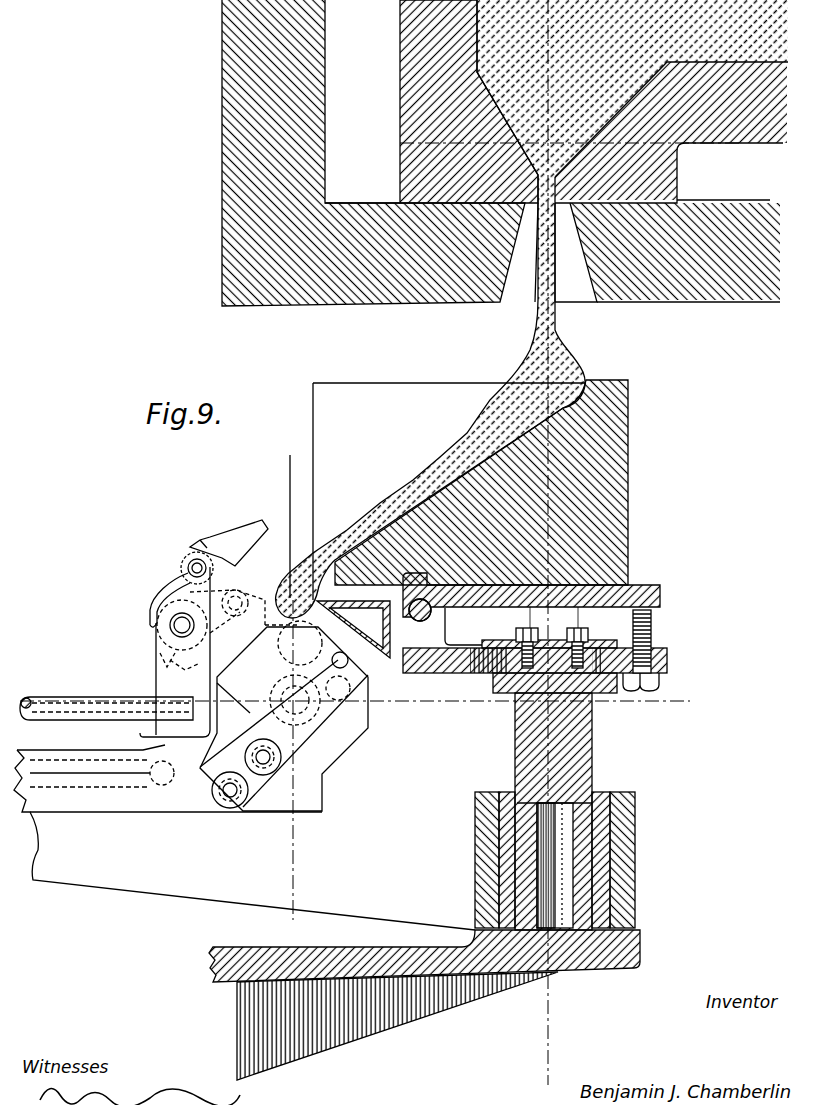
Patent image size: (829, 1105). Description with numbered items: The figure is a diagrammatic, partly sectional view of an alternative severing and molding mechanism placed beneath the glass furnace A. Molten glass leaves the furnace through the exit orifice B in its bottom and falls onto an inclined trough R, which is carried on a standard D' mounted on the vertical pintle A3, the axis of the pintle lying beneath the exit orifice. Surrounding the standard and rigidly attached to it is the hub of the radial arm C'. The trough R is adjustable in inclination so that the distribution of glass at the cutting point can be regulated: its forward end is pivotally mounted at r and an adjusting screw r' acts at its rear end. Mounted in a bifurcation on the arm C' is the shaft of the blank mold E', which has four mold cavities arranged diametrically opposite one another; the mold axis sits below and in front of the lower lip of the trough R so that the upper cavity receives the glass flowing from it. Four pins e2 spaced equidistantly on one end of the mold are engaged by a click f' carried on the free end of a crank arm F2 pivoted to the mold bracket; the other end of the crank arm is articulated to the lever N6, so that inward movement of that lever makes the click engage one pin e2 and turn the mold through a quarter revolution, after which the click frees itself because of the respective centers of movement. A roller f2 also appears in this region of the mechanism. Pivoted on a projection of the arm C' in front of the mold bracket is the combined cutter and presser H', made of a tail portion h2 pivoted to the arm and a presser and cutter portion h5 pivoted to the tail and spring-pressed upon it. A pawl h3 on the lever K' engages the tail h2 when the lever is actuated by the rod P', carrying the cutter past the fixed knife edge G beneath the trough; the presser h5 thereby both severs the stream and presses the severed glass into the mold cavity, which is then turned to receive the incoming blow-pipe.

The furnace A is at (427, 82).
The exit aperture B is at (555, 188).
The inclined trough R is at (607, 518).
The fixed knife edge G is at (318, 597).
The combined cutter and presser H' is at (196, 560).
The presser and cutter portion h5 is at (240, 542).
The tail portion h2 is at (188, 655).
The pawl h3 is at (200, 670).
The pins e2 is at (197, 734).
The click f' is at (361, 665).
The roller f2 is at (335, 692).
The rod P' is at (169, 794).
The lever K' is at (175, 705).
The lever N6 is at (205, 793).
The crank arm F2 is at (260, 777).
The blank mold E' is at (286, 724).
The radial arm C' is at (244, 842).
The pivot r is at (531, 609).
The adjusting screw r' is at (539, 649).
The standard D' is at (563, 801).
The pintle A3 is at (582, 870).